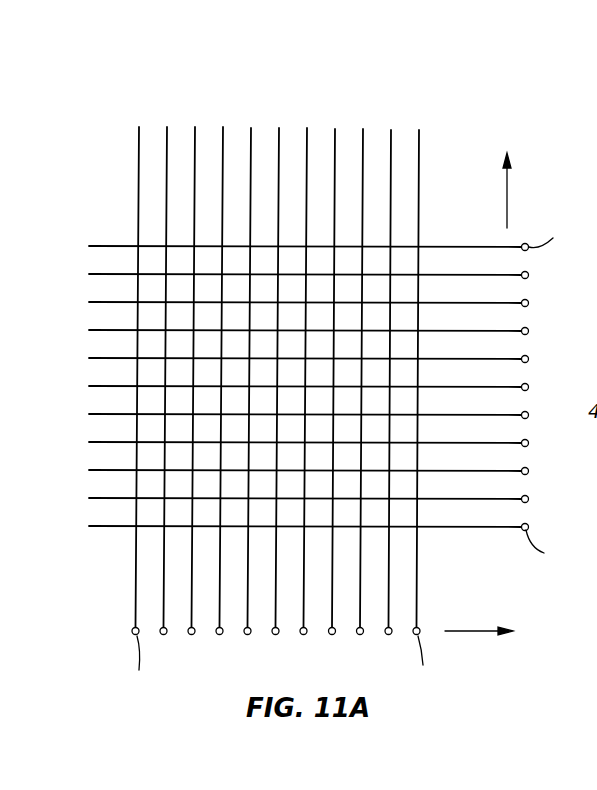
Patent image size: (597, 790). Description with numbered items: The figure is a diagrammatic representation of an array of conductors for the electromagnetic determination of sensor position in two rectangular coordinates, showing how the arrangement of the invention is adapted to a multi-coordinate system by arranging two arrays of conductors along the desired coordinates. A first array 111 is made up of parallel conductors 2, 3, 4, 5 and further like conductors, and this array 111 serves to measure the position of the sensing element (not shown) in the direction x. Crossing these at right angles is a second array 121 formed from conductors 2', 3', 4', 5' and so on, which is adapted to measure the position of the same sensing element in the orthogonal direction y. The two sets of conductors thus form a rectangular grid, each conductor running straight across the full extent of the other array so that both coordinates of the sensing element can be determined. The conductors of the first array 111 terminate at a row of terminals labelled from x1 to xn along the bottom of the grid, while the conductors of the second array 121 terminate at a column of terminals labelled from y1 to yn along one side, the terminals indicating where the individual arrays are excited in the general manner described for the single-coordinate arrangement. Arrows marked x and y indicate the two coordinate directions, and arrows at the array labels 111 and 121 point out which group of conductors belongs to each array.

The conductor 2 is at (148, 357).
The conductor 3 is at (177, 356).
The conductor 4 is at (208, 357).
The conductor 5 is at (237, 357).
The conductor 2' is at (324, 224).
The conductor 3' is at (340, 274).
The conductor 4' is at (335, 314).
The conductor 5' is at (334, 342).
The second array 121 is at (105, 231).
The array 111 is at (121, 573).
The direction X x is at (489, 632).
The direction Y y is at (494, 190).
The first x terminal x1 is at (143, 659).
The nth x terminal xn is at (430, 657).
The first y terminal y1 is at (545, 548).
The nth y terminal yn is at (551, 239).